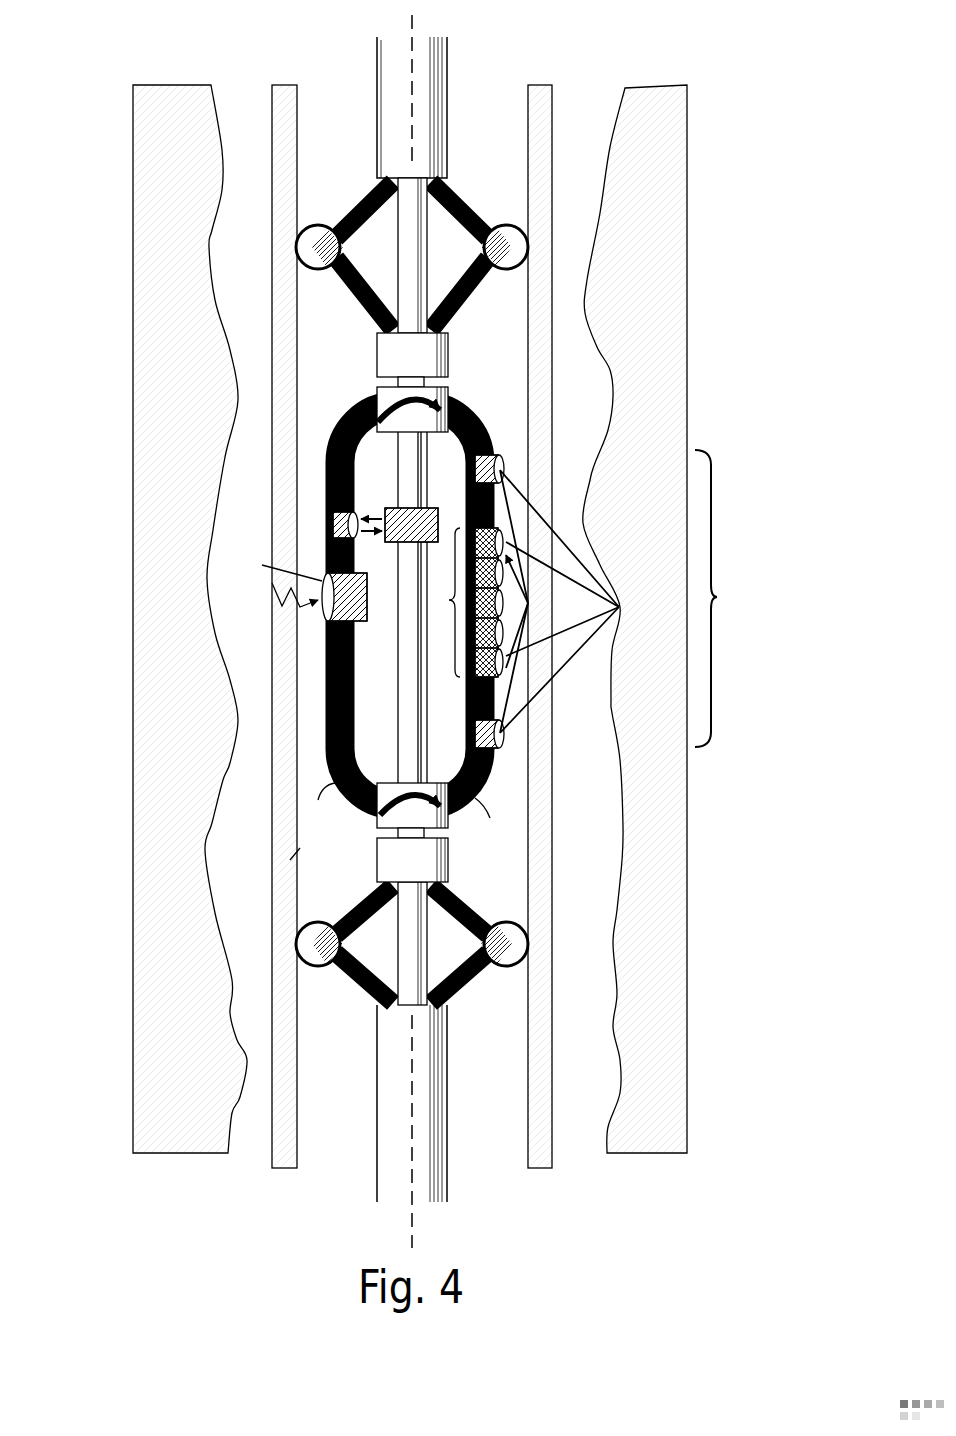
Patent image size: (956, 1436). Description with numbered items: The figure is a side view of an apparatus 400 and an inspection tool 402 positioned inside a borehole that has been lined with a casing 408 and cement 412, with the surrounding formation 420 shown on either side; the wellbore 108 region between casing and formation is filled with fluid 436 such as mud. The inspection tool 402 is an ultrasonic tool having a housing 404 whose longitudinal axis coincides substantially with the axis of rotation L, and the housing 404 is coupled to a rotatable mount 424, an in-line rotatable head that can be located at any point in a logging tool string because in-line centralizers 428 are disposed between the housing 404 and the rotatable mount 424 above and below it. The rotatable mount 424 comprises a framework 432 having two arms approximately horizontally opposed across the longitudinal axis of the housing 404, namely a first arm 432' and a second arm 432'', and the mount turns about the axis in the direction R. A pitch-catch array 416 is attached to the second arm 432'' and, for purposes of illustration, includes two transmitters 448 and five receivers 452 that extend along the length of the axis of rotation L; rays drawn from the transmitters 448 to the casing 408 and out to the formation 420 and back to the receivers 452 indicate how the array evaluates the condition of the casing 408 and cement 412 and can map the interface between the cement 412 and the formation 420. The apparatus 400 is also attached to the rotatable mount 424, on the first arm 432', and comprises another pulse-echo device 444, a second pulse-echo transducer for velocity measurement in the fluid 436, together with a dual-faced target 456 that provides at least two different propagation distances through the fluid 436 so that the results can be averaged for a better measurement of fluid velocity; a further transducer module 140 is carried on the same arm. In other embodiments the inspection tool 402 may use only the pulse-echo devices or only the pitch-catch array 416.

The wellbore 108 is at (290, 860).
The transmitter/receiver module 140 is at (365, 622).
The apparatus 400 is at (417, 601).
The inspection tool 402 is at (446, 626).
The housing 404 is at (470, 626).
The casing 408 is at (543, 872).
The cement 412 is at (612, 1014).
The pitch-catch array 416 is at (727, 598).
The formation 420 is at (199, 759).
The rotatable mount 424 is at (458, 368).
The in-line centralizers 428 is at (452, 192).
The framework 432 is at (395, 648).
The first arm 432' is at (325, 807).
The second arm 432'' is at (499, 827).
The fluid 436 is at (355, 1106).
The pulse-echo device 444 is at (269, 581).
The transmitters 448 is at (498, 455).
The receivers 452 is at (456, 602).
The dual-faced target 456 is at (393, 508).
The axis of rotation L is at (413, 20).
The rotation direction R is at (418, 405).